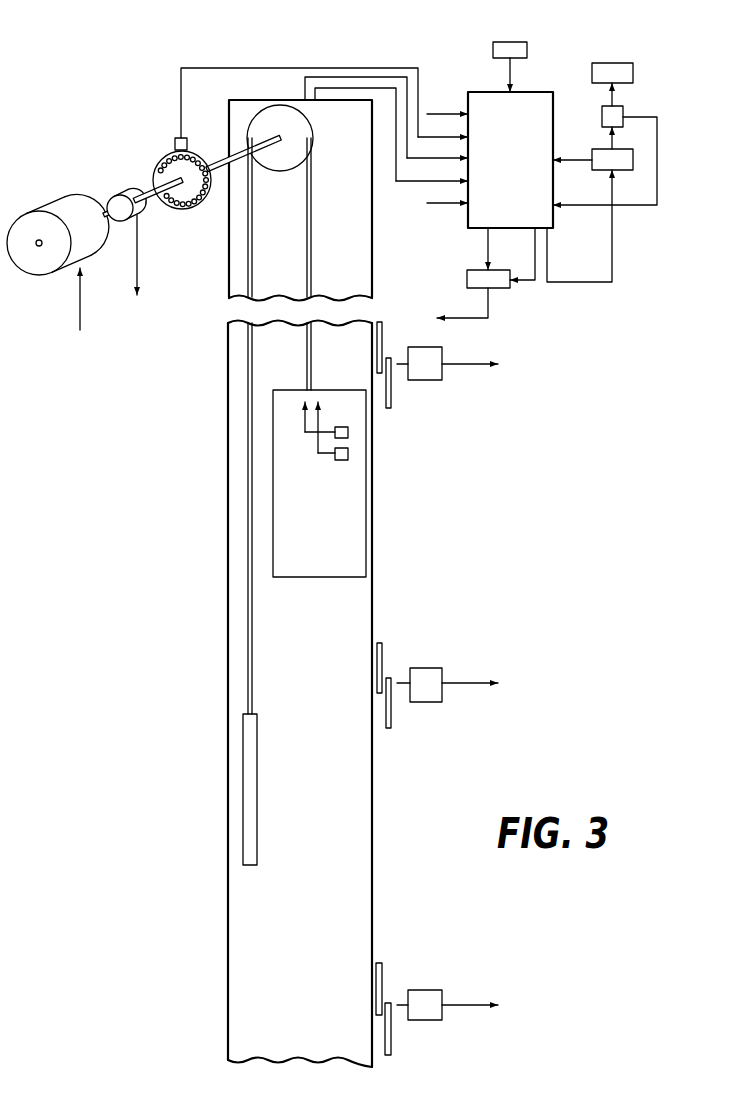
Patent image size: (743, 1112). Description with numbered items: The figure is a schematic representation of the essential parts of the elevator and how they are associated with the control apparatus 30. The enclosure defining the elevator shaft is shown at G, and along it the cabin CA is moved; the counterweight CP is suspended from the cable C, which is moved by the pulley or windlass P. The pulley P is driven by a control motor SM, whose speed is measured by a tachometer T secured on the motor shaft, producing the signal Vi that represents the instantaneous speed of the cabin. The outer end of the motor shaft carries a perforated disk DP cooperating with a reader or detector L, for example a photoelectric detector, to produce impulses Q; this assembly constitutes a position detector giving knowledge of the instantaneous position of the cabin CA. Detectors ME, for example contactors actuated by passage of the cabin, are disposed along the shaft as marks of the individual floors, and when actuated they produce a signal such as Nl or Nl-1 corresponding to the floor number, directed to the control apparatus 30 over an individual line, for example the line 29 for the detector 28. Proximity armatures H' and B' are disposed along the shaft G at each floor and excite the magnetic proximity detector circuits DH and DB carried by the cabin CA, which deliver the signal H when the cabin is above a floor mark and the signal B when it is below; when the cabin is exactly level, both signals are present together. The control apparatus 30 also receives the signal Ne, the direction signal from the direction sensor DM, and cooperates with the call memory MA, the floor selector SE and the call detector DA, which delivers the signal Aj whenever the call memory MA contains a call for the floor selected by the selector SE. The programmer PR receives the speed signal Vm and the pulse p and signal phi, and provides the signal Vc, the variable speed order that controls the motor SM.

The control motor SM is at (57, 209).
The tachometer T is at (142, 213).
The perforated disk DP is at (155, 169).
The reader or detector L is at (175, 143).
The pulley or windlass P is at (313, 130).
The cable C is at (311, 241).
The counterweight CP is at (257, 782).
The cabin CA is at (319, 483).
The elevator shaft enclosure G is at (372, 868).
The control apparatus 30 is at (510, 160).
The direction sensor DM is at (508, 41).
The call memory MA is at (612, 62).
The call detector DA is at (602, 110).
The floor selector SE is at (622, 170).
The programmer PR is at (467, 280).
The floor count signal Ne is at (447, 100).
The impulses Q is at (443, 126).
The signal H is at (376, 284).
The signal B is at (393, 306).
The instantaneous speed signal Vi is at (299, 266).
The variable speed order signal Vc is at (284, 306).
The analog speed signal Vm is at (504, 249).
The call signal Aj is at (605, 176).
The pulse p is at (588, 226).
The signal phi is at (522, 265).
The upper proximity armature H' is at (393, 664).
The lower proximity armature B' is at (400, 711).
The floor detector ME is at (427, 381).
The floor signal Nl is at (485, 686).
The floor signal Nl-1 is at (494, 1008).
The upper proximity detector circuit DH is at (348, 433).
The lower proximity detector circuit DB is at (348, 456).
The individual line 29 is at (465, 682).
The floor detector 28 is at (437, 702).